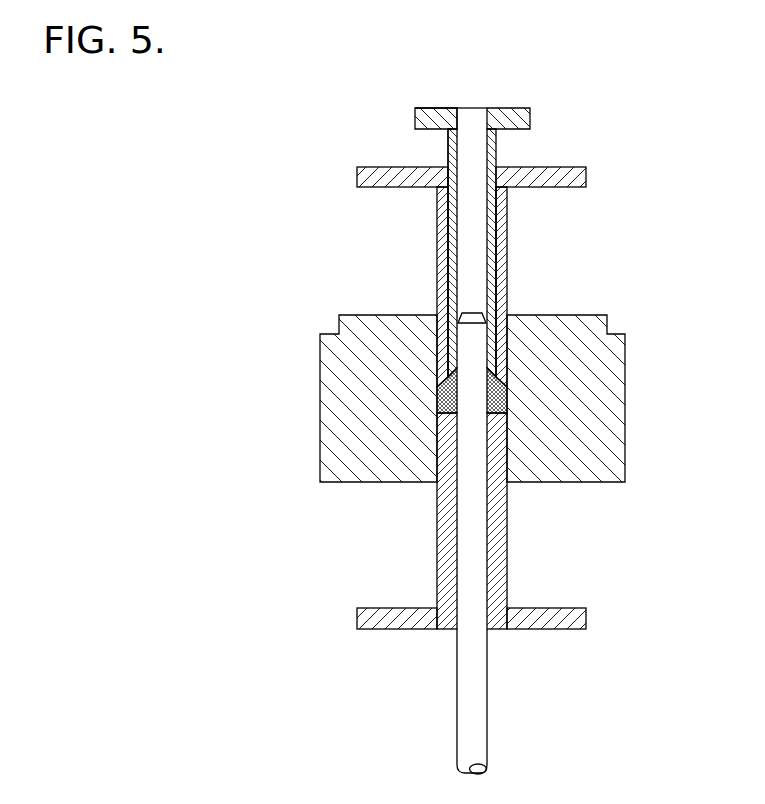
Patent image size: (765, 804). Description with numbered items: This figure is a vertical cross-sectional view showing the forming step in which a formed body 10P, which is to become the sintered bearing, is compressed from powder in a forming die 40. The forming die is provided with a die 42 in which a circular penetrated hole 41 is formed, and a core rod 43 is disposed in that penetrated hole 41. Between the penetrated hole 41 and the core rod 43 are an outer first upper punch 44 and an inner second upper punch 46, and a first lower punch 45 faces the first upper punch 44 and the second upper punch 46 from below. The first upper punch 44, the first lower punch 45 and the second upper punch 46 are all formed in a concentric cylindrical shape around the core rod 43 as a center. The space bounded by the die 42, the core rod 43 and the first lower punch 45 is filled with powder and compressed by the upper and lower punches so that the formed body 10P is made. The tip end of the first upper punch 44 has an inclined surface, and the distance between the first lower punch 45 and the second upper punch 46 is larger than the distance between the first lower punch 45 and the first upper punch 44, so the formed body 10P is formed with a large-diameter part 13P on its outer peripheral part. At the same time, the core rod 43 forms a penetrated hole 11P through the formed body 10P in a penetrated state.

The nozzle unit 40 is at (346, 220).
The penetrated hole 41 is at (510, 465).
The die 42 is at (622, 348).
The core rod 43 is at (478, 328).
The first upper punch 44 is at (437, 268).
The first lower punch 45 is at (437, 512).
The second upper punch 46 is at (450, 292).
The formed body 10P is at (508, 380).
The penetrated hole 11P is at (455, 405).
The large-diameter part 13P is at (437, 393).